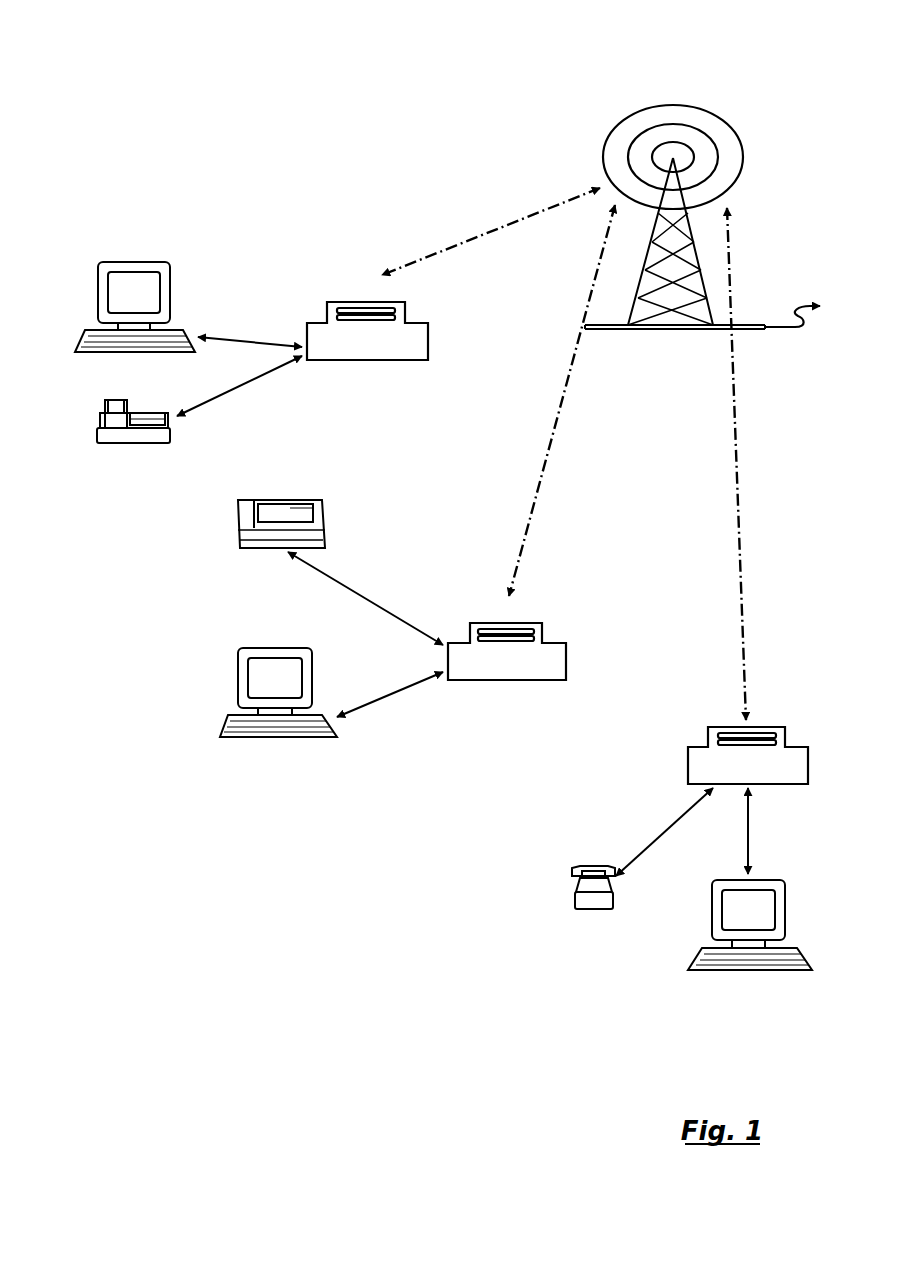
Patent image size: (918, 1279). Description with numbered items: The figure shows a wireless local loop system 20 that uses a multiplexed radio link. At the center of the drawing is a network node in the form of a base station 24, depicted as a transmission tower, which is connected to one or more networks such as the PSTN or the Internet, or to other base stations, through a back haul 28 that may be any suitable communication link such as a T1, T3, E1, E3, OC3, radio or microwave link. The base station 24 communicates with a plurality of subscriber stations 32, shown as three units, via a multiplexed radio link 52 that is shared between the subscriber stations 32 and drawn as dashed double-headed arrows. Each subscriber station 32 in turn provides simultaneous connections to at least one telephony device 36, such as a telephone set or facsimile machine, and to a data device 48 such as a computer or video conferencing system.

The wireless local loop system 20 is at (427, 62).
The base station 24 is at (675, 231).
The back haul 28 is at (792, 333).
The subscriber station 32 is at (492, 589).
The telephony device 36 is at (328, 676).
The data device 48 is at (427, 642).
The multiplexed radio link 52 is at (564, 443).